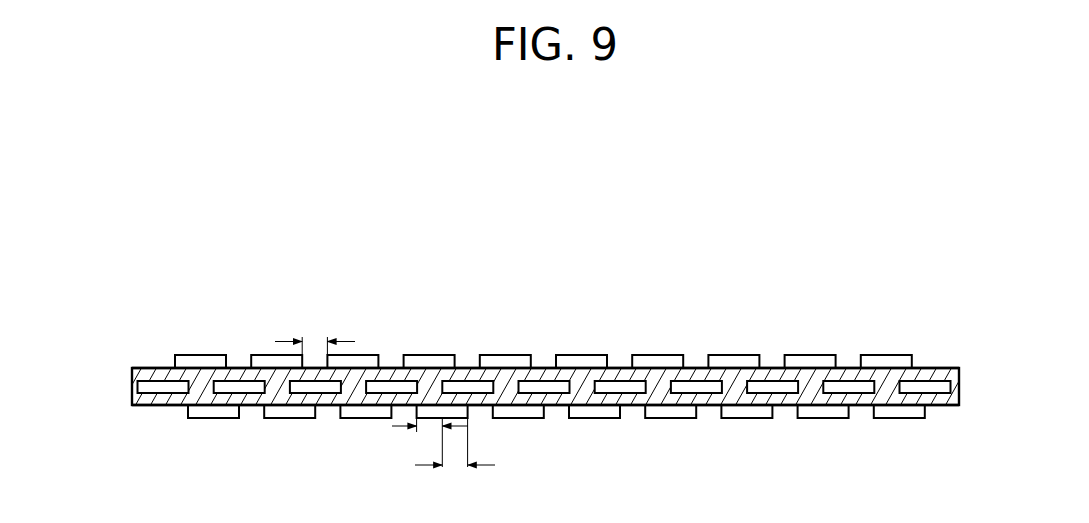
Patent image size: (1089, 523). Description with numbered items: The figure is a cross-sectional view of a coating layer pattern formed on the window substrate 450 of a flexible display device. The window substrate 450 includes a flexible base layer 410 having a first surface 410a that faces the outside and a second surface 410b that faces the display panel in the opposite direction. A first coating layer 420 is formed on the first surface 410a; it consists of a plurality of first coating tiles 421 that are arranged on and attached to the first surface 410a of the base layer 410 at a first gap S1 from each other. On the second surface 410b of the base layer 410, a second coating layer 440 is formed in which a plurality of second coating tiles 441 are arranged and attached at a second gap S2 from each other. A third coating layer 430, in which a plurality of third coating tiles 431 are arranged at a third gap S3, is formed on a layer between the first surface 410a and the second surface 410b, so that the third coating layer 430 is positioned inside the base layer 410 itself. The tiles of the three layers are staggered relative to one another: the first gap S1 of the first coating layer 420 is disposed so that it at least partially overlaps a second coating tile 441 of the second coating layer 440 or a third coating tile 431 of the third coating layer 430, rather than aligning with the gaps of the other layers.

The flexible base layer 410 is at (943, 373).
The first surface 410a is at (140, 367).
The second surface 410b is at (139, 406).
The first coating layer 420 is at (913, 361).
The first coating tile 421 is at (187, 354).
The third coating layer 430 is at (947, 388).
The third coating tile 431 is at (220, 393).
The second coating layer 440 is at (920, 413).
The second coating tile 441 is at (362, 411).
The window substrate 450 is at (1012, 425).
The first gap S1 is at (315, 328).
The second gap S2 is at (455, 460).
The third gap S3 is at (430, 440).